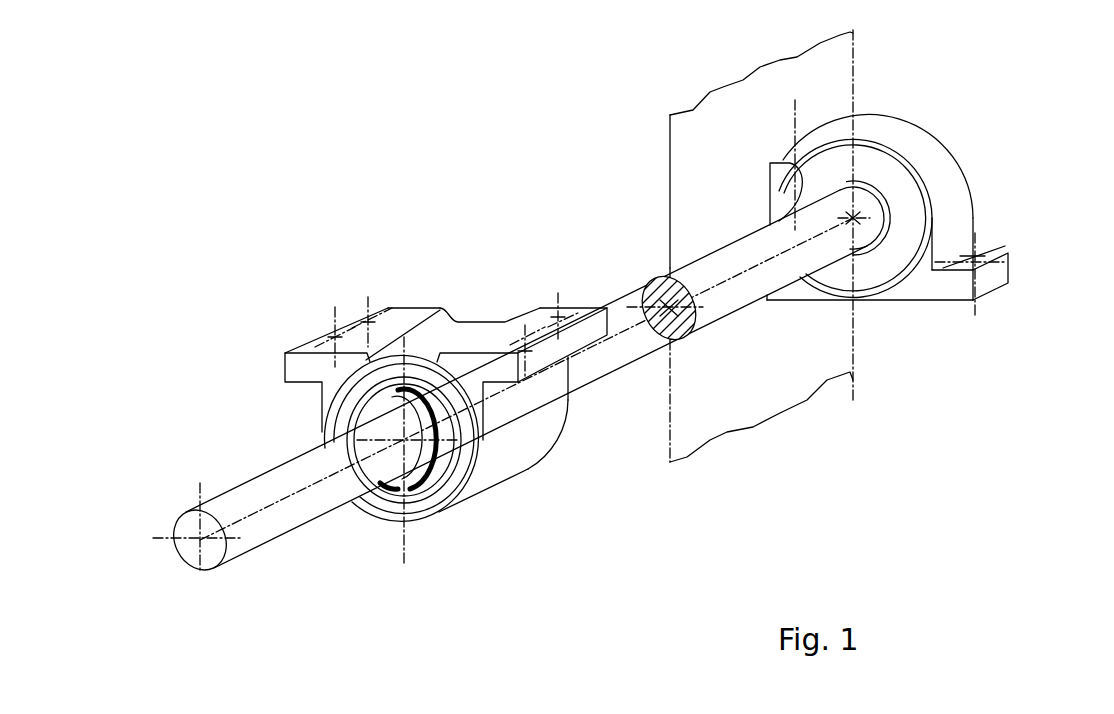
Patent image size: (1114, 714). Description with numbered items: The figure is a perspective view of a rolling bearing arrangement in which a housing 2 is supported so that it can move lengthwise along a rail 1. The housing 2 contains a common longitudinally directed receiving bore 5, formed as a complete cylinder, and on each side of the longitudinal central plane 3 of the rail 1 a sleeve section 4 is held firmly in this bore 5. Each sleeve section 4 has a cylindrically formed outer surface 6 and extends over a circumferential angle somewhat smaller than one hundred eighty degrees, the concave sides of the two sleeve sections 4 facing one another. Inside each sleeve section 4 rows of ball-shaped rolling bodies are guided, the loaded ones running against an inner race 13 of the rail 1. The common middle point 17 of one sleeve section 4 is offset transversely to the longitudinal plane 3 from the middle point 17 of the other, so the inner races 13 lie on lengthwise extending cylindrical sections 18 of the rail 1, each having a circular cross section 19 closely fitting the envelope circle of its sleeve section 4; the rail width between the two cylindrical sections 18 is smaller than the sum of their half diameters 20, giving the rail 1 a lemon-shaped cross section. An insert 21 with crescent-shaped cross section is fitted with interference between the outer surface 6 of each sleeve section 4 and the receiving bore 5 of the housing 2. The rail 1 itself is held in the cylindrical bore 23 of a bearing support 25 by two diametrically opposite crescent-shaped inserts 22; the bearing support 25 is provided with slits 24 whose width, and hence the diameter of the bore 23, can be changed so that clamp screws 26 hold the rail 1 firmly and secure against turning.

The rail 1 is at (280, 520).
The housing 2 is at (518, 452).
The longitudinal central plane 3 is at (833, 372).
The sleeve section 4 is at (372, 415).
The receiving bore 5 is at (418, 400).
The outer surface 6 is at (360, 423).
The inner race 13 is at (627, 352).
The common middle point 17 is at (375, 503).
The cylindrical section 18 is at (636, 282).
The circular cross section 19 is at (640, 262).
The half diameter 20 is at (672, 342).
The insert 21 is at (347, 427).
The crescent-shaped insert 22 is at (890, 226).
The cylindrical bore 23 is at (886, 190).
The slit 24 is at (760, 213).
The bearing support 25 is at (990, 280).
The clamp screw 26 is at (800, 124).